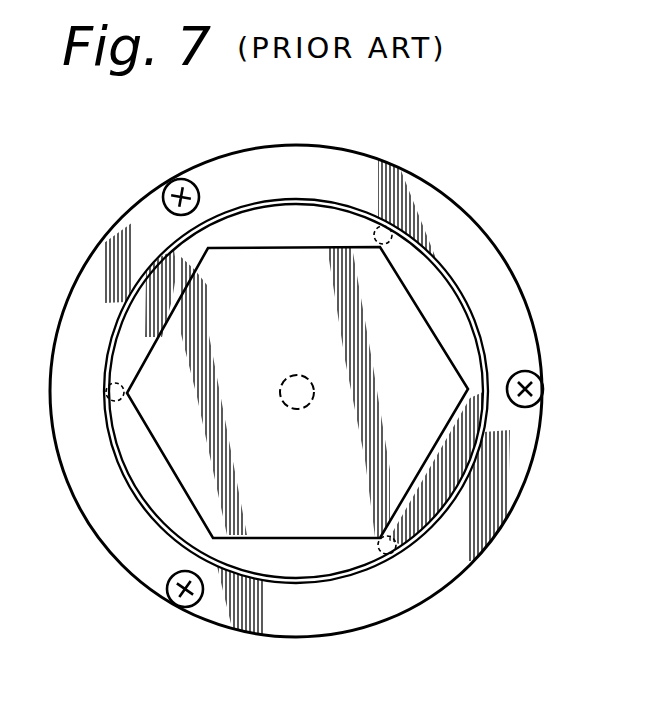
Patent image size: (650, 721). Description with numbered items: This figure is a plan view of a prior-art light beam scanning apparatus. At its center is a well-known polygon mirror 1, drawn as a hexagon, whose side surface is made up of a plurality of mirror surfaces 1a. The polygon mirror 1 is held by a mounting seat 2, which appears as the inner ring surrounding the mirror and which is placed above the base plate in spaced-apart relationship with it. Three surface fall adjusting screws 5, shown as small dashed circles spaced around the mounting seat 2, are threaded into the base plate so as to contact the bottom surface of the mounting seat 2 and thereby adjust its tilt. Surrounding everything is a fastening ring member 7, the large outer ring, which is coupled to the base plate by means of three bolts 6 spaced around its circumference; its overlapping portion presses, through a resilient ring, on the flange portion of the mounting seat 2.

The polygon mirror 1 is at (428, 358).
The mirror surfaces 1a is at (185, 295).
The mounting seat 2 is at (442, 490).
The surface fall adjusting screws 5 is at (386, 214).
The bolts 6 is at (540, 389).
The fastening ring member 7 is at (522, 460).